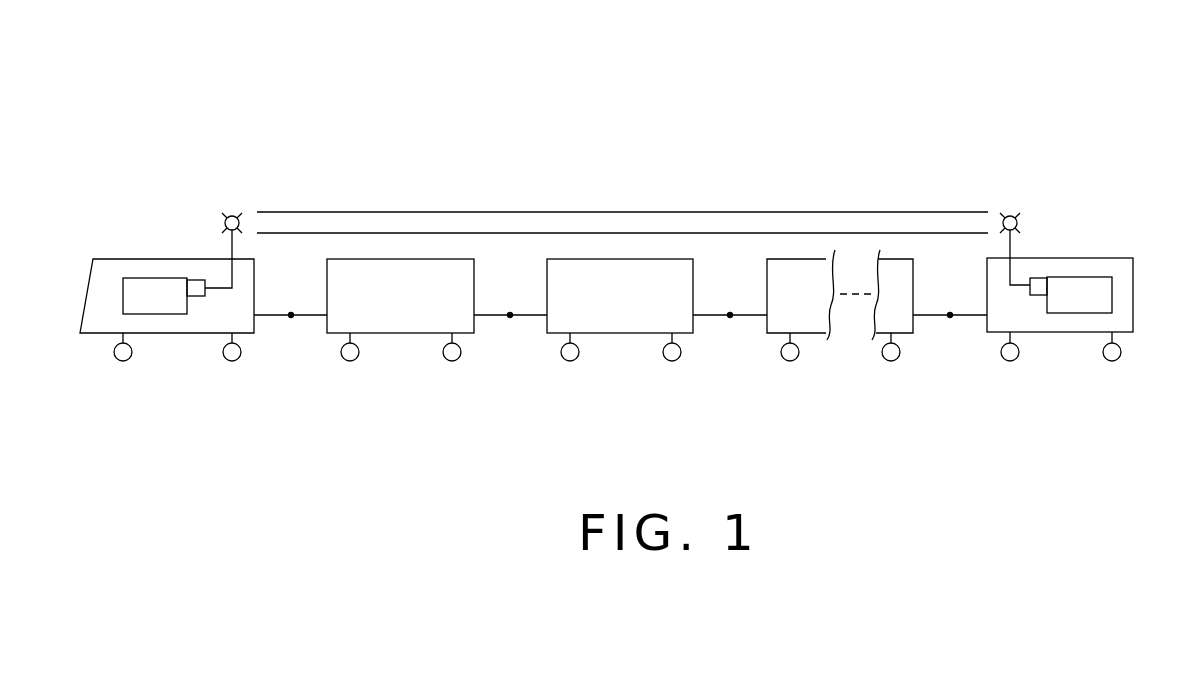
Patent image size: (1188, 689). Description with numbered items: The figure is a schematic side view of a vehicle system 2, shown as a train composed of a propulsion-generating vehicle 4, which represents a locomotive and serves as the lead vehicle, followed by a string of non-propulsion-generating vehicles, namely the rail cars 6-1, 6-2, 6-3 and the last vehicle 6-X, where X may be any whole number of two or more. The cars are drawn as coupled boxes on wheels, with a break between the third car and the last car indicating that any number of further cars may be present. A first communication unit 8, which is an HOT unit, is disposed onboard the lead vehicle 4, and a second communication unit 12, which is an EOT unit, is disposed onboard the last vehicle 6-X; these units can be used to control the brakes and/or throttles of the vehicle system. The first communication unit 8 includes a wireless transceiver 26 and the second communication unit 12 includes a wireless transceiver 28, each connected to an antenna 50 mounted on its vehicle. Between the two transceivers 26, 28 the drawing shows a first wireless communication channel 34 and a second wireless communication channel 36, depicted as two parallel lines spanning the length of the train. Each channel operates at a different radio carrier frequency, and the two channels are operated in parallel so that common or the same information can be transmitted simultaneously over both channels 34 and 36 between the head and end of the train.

The vehicle system 2 is at (648, 110).
The propulsion-generating vehicle 4 is at (178, 259).
The non-propulsion-generating vehicle 6-1 is at (400, 259).
The non-propulsion-generating vehicle 6-2 is at (615, 259).
The non-propulsion-generating vehicle 6-3 is at (820, 259).
The last non-propulsion-generating vehicle 6-X is at (1060, 258).
The first communication unit 8 is at (137, 278).
The second communication unit 12 is at (1080, 277).
The wireless transceiver 26 is at (198, 294).
The wireless transceiver 28 is at (1038, 292).
The first wireless communication channel 34 is at (483, 212).
The second wireless communication channel 36 is at (707, 233).
The antenna 50 is at (232, 214).